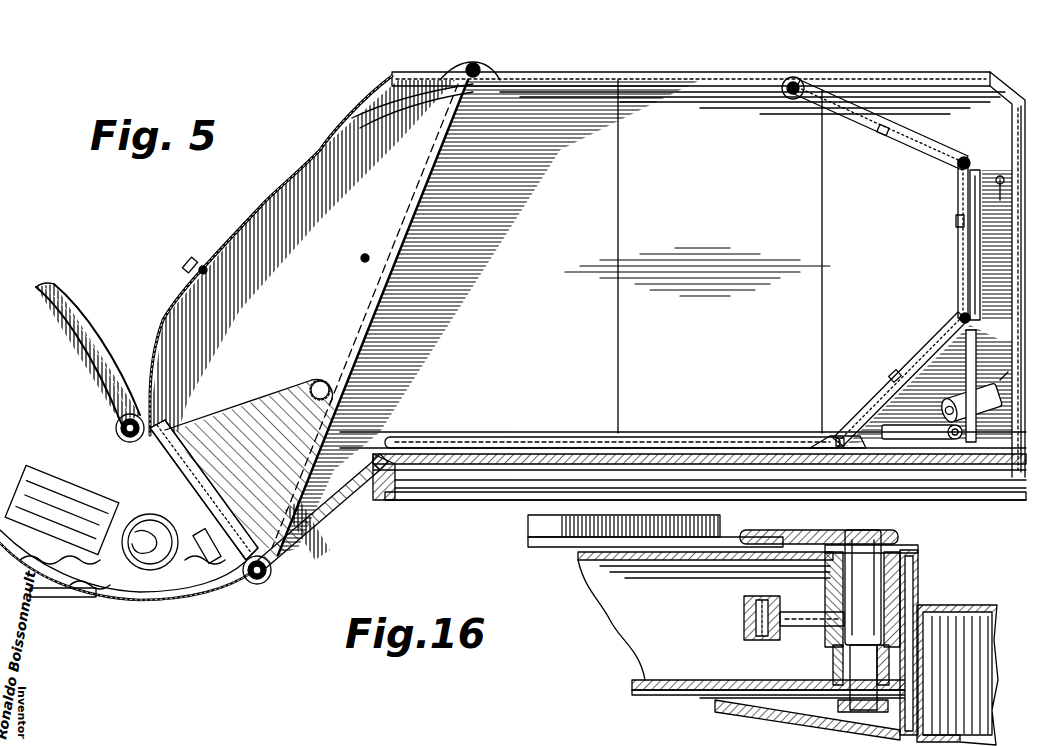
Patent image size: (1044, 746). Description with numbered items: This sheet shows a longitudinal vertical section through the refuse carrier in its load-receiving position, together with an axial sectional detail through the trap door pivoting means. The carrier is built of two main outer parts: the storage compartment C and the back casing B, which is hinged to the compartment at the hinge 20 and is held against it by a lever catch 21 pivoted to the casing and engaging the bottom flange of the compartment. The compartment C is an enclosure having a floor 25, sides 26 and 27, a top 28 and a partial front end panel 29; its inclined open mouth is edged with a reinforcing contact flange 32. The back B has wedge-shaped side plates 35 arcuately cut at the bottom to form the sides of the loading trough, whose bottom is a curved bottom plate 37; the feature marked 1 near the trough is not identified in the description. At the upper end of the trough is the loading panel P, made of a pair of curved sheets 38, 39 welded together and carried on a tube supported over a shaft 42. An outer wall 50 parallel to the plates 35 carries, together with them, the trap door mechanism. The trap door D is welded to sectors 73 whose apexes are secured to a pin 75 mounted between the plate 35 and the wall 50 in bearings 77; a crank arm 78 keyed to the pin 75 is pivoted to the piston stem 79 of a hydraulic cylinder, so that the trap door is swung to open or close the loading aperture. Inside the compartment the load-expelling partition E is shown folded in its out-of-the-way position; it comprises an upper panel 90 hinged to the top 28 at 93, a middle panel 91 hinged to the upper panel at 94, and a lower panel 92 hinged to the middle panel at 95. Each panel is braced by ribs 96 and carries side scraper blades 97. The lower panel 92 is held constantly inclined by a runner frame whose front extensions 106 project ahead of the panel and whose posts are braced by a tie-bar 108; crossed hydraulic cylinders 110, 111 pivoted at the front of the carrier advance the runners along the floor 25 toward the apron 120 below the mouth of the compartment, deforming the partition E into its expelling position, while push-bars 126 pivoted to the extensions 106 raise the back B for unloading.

In FIG. 5, the shelf 1 is at (100, 600).
In FIG. 5, the hinge 20 is at (478, 66).
In FIG. 5, the lever catch 21 is at (262, 586).
In FIG. 5, the floor 25 is at (478, 462).
In FIG. 16, the side 26 is at (966, 612).
In FIG. 5, the side 27 is at (697, 256).
In FIG. 5, the top 28 is at (722, 75).
In FIG. 5, the partial front end panel 29 is at (1004, 176).
In FIG. 16, the reinforcing contact flange 32 is at (922, 716).
In FIG. 5, the wedge-shaped side plates 35 is at (486, 317).
In FIG. 16, the wedge-shaped side plates 35 is at (656, 561).
In FIG. 5, the curved bottom plate 37 is at (150, 600).
In FIG. 5, the curved sheet 38 is at (82, 340).
In FIG. 5, the curved sheet 39 is at (100, 334).
In FIG. 5, the shaft 42 is at (116, 428).
In FIG. 16, the outer wall 50 is at (700, 684).
In FIG. 5, the sectors 73 is at (256, 412).
In FIG. 16, the sectors 73 is at (795, 534).
In FIG. 16, the pin 75 is at (864, 534).
In FIG. 16, the bearings 77 is at (916, 580).
In FIG. 16, the crank arm 78 is at (812, 632).
In FIG. 16, the piston stem 79 is at (744, 622).
In FIG. 5, the upper panel 90 is at (918, 152).
In FIG. 5, the panel 91 is at (956, 270).
In FIG. 5, the lower panel 92 is at (918, 356).
In FIG. 5, the hinge 93 is at (790, 95).
In FIG. 5, the hinge 94 is at (964, 157).
In FIG. 5, the hinge 95 is at (960, 318).
In FIG. 5, the ribs 96 is at (884, 132).
In FIG. 5, the scraper blade 97 is at (870, 132).
In FIG. 5, the runner extension 106 is at (830, 445).
In FIG. 5, the tie-bar 108 is at (978, 372).
In FIG. 5, the cylinder 110 is at (936, 462).
In FIG. 5, the cylinder 111 is at (953, 386).
In FIG. 5, the apron 120 is at (315, 520).
In FIG. 5, the push-bars 126 is at (686, 440).
In FIG. 5, the back casing B is at (254, 208).
In FIG. 5, the storage compartment C is at (1005, 90).
In FIG. 5, the trap door D is at (160, 472).
In FIG. 16, the trap door D is at (522, 532).
In FIG. 5, the inside partition E is at (948, 186).
In FIG. 5, the loading panel P is at (85, 312).